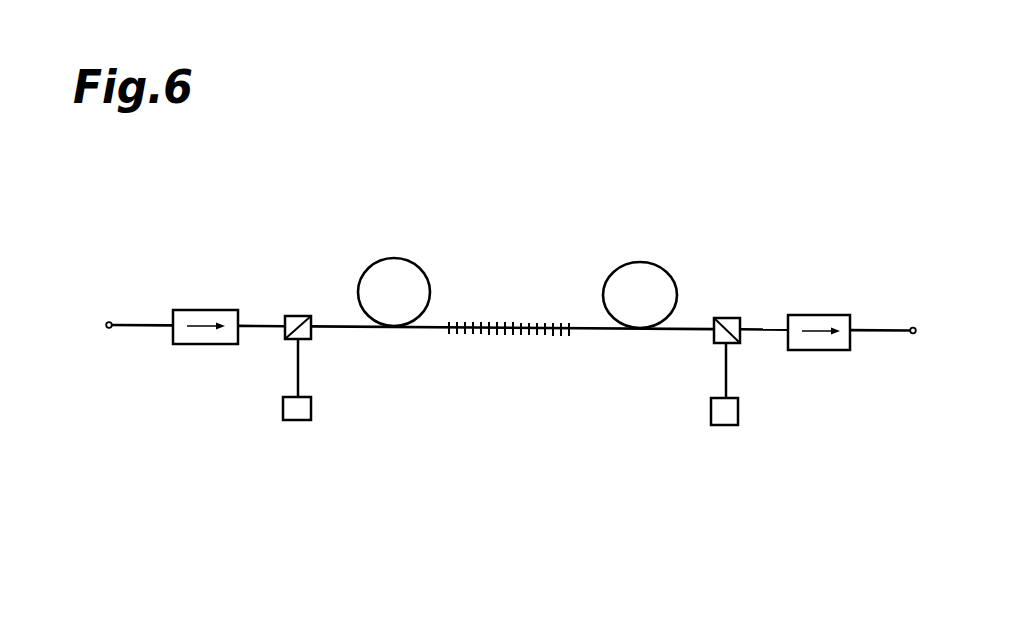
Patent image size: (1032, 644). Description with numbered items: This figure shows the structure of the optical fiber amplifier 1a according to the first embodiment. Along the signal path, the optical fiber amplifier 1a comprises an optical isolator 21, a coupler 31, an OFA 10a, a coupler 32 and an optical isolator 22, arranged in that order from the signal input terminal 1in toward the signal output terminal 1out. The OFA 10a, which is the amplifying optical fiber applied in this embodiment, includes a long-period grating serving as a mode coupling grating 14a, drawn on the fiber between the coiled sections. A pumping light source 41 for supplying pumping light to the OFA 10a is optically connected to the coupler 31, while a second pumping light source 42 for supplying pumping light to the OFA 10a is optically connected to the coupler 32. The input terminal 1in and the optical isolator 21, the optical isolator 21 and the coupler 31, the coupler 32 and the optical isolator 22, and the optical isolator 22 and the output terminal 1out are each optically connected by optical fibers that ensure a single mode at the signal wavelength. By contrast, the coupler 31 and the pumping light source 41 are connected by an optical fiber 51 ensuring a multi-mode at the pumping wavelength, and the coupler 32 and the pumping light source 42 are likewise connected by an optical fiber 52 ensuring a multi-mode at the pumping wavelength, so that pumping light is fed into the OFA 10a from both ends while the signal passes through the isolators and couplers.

The optical fiber amplifier 1a is at (677, 213).
The signal input terminal 1in is at (109, 328).
The signal output terminal 1out is at (913, 334).
The optical isolator 21 is at (207, 310).
The optical isolator 22 is at (818, 315).
The coupler 31 is at (298, 316).
The coupler 32 is at (722, 318).
The pumping light source 41 is at (295, 420).
The pumping light source 42 is at (722, 425).
The optical fiber 51 is at (298, 369).
The optical fiber 52 is at (726, 378).
The OFA 10a is at (393, 258).
The mode coupling grating 14a is at (517, 322).